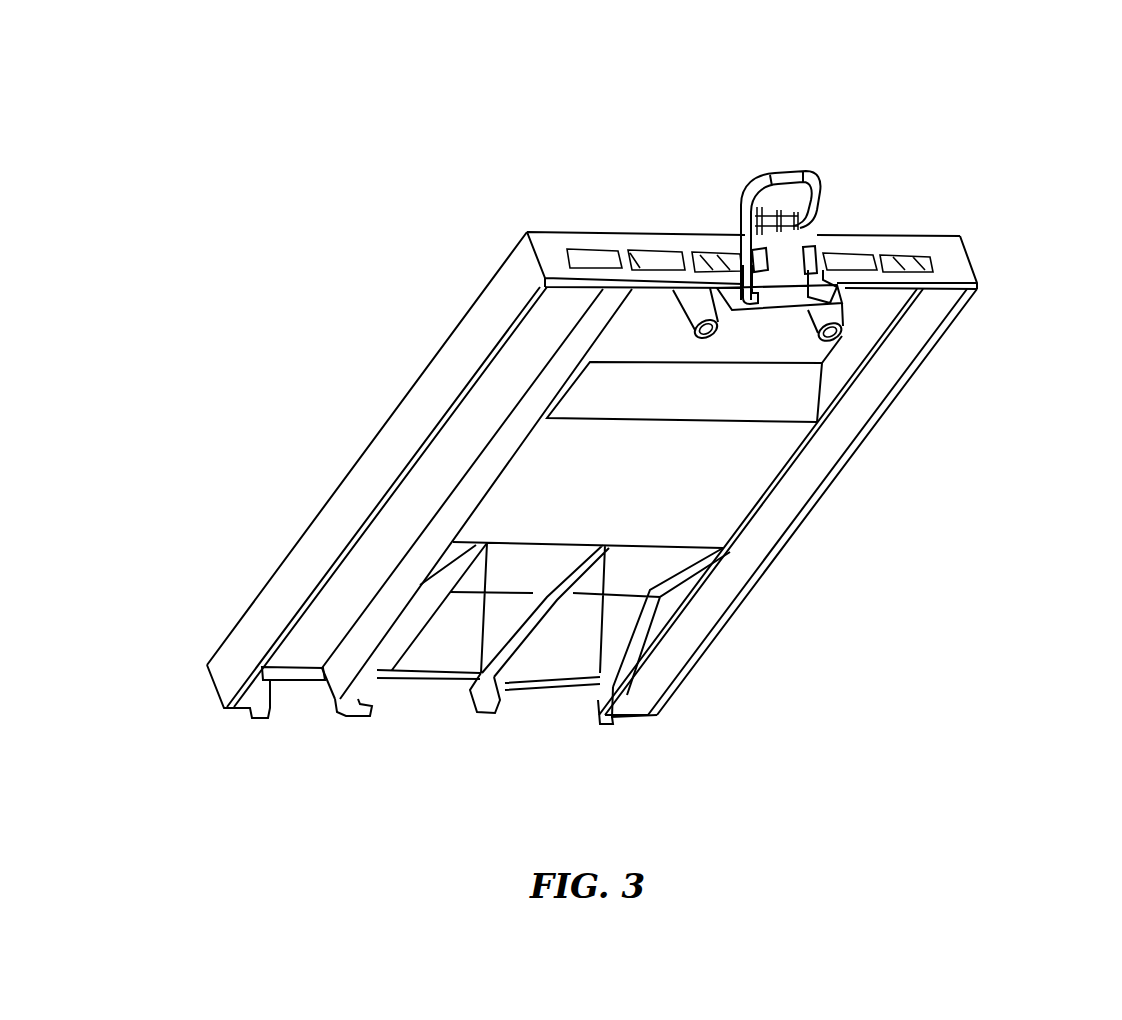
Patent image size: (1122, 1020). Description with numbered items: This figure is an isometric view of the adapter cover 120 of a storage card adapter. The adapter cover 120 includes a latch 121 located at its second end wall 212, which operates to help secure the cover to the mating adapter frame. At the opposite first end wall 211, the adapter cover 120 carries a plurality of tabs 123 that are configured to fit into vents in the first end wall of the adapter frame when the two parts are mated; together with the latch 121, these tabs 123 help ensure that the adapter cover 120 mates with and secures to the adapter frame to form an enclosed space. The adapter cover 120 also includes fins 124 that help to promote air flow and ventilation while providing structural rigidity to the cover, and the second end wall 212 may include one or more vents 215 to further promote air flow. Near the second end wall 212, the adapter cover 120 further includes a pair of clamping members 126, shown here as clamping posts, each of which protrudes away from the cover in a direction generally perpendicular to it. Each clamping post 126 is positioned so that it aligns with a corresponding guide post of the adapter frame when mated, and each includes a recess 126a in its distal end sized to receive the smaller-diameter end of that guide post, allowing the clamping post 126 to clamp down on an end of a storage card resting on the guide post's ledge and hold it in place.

The adapter cover 120 is at (406, 210).
The latch 121 is at (786, 172).
The second end wall 212 is at (948, 262).
The vents 215 is at (652, 257).
The clamping members 126 is at (700, 306).
The recess 126a is at (683, 340).
The fins 124 is at (650, 635).
The tabs 123 is at (597, 713).
The first end wall 211 is at (635, 703).